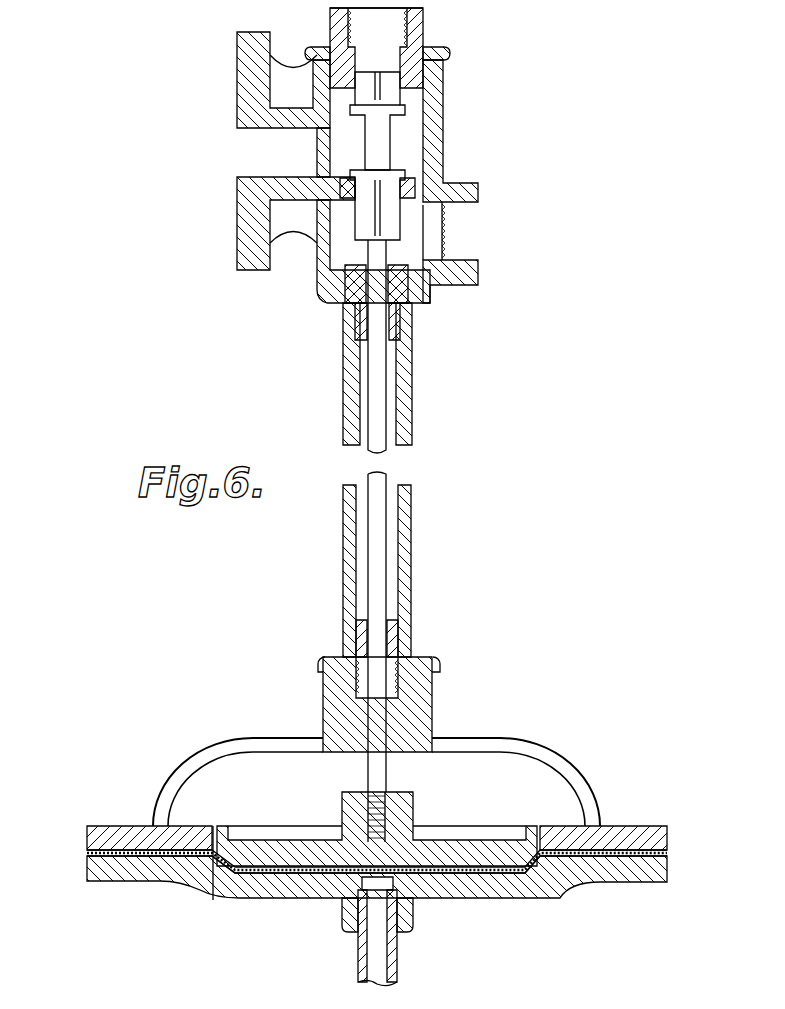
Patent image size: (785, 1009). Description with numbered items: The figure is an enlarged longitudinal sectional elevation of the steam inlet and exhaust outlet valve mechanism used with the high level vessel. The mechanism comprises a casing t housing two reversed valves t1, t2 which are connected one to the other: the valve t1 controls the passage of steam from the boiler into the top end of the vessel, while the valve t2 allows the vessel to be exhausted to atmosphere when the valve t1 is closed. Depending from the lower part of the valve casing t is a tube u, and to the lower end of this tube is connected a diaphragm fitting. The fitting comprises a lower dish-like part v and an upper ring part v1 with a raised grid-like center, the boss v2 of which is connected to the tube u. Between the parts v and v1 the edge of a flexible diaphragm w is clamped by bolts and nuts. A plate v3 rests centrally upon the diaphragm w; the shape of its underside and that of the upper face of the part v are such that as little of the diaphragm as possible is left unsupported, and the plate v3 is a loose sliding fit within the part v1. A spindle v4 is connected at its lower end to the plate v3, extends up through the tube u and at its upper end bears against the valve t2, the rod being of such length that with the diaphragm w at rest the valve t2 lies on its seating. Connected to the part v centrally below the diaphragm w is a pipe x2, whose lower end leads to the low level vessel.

The valve casing t is at (310, 276).
The valve t1 is at (406, 124).
The valve t2 is at (412, 162).
The tube u is at (414, 368).
The spindle v4 is at (388, 452).
The boss v2 is at (434, 718).
The upper ring part v1 is at (624, 786).
The plate v3 is at (306, 846).
The lower dish-like part v is at (126, 882).
The flexible diaphragm w is at (214, 875).
The pipe x2 is at (378, 967).